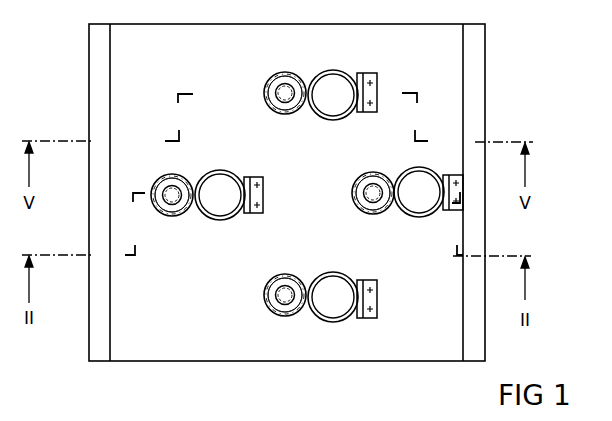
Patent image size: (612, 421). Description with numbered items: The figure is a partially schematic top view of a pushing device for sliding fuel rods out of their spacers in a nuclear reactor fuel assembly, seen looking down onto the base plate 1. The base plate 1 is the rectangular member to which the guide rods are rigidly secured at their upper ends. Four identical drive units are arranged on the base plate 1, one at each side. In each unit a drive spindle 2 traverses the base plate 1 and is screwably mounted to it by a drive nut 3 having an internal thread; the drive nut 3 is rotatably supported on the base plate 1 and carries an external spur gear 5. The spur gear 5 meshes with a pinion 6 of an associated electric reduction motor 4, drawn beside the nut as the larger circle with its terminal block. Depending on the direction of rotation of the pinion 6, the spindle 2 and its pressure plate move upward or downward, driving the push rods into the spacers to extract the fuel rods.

The base plate 1 is at (452, 96).
The drive spindle 2 is at (283, 89).
The drive nut 3 is at (268, 96).
The electric reduction motor 4 is at (334, 78).
The external spur gear 5 is at (291, 74).
The pinion 6 is at (329, 120).